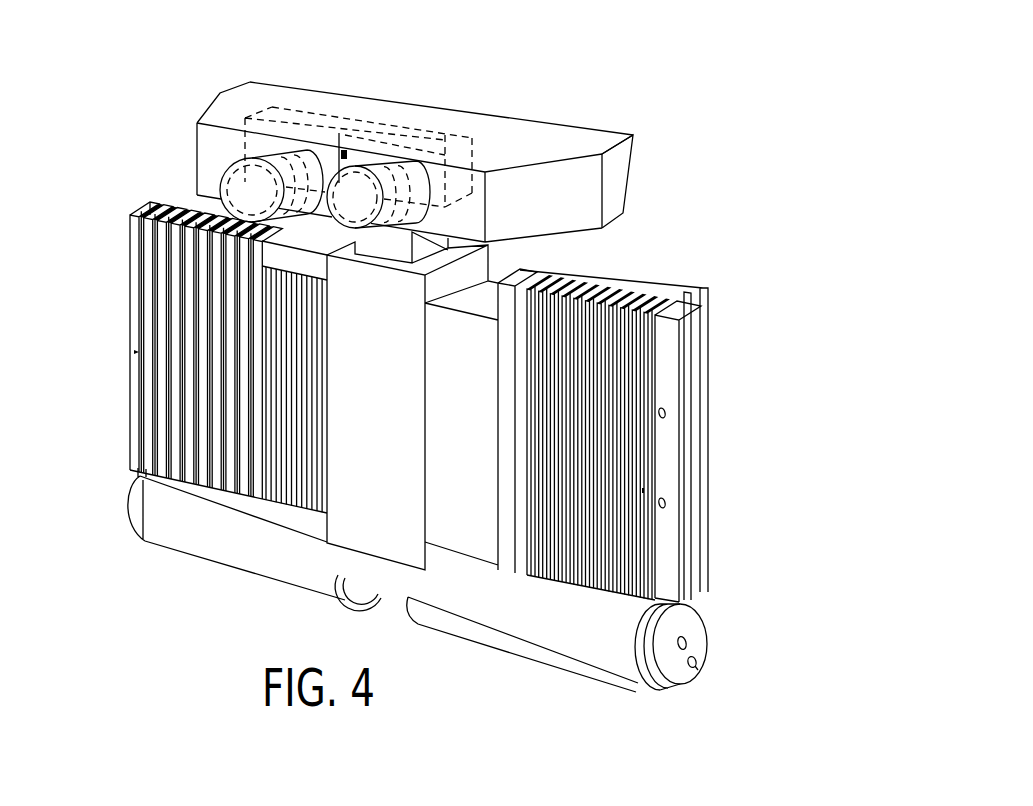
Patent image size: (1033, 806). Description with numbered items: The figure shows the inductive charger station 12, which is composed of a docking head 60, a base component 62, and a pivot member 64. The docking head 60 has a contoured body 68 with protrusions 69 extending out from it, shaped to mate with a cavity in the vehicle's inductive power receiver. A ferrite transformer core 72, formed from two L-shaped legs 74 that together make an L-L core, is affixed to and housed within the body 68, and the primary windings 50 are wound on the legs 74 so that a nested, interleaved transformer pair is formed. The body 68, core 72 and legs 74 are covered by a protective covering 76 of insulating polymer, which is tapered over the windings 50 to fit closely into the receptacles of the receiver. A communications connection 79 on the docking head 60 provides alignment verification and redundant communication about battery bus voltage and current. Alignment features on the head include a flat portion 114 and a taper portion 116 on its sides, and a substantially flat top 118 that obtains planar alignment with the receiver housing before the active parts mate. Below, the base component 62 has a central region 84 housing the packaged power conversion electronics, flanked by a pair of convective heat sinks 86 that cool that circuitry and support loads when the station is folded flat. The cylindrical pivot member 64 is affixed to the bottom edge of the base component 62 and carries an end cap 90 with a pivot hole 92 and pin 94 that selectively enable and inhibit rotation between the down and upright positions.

The inductive charger station 12 is at (660, 104).
The primary windings 50 is at (216, 131).
The docking head 60 is at (401, 64).
The base component 62 is at (734, 483).
The pivot member 64 is at (514, 672).
The contoured body 68 is at (591, 122).
The protrusions 69 is at (205, 166).
The ferrite transformer core 72 is at (305, 104).
The L-shaped legs 74 is at (272, 105).
The protective covering 76 is at (535, 140).
The communications connection 79 is at (342, 150).
The central region 84 is at (355, 514).
The convective heat sinks 86 is at (140, 400).
The end cap 90 is at (675, 670).
The pivot hole 92 is at (686, 639).
The pin 94 is at (694, 667).
The flat portion 114 is at (618, 167).
The taper portion 116 is at (583, 190).
The flat top 118 is at (220, 104).